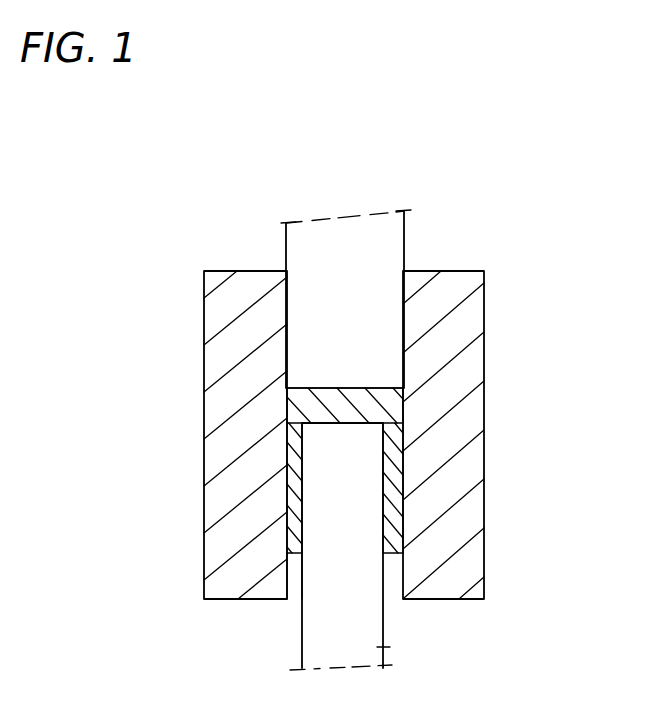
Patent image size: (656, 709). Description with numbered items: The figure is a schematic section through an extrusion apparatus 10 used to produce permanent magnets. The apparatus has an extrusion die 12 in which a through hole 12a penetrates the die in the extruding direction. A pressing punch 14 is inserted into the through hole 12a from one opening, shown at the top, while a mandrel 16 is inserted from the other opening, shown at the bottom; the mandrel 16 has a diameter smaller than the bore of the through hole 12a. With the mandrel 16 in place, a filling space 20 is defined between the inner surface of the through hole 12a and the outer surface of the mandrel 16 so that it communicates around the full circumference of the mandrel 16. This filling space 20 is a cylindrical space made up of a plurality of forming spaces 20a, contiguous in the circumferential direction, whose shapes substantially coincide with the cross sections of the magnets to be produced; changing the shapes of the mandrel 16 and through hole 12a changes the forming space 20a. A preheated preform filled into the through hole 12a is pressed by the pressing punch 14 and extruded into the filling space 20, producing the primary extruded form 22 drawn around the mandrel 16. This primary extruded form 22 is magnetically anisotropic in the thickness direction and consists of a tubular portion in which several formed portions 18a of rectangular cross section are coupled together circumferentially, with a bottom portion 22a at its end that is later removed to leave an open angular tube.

The extrusion apparatus 10 is at (211, 245).
The extrusion die 12 is at (208, 355).
The through hole 12a is at (401, 591).
The pressing punch 14 is at (397, 240).
The mandrel 16 is at (383, 647).
The formed portion 18a is at (284, 509).
The filling space 20 is at (293, 575).
The forming space 20a is at (299, 434).
The primary extruded form 22 is at (404, 441).
The bottom portion 22a is at (401, 371).